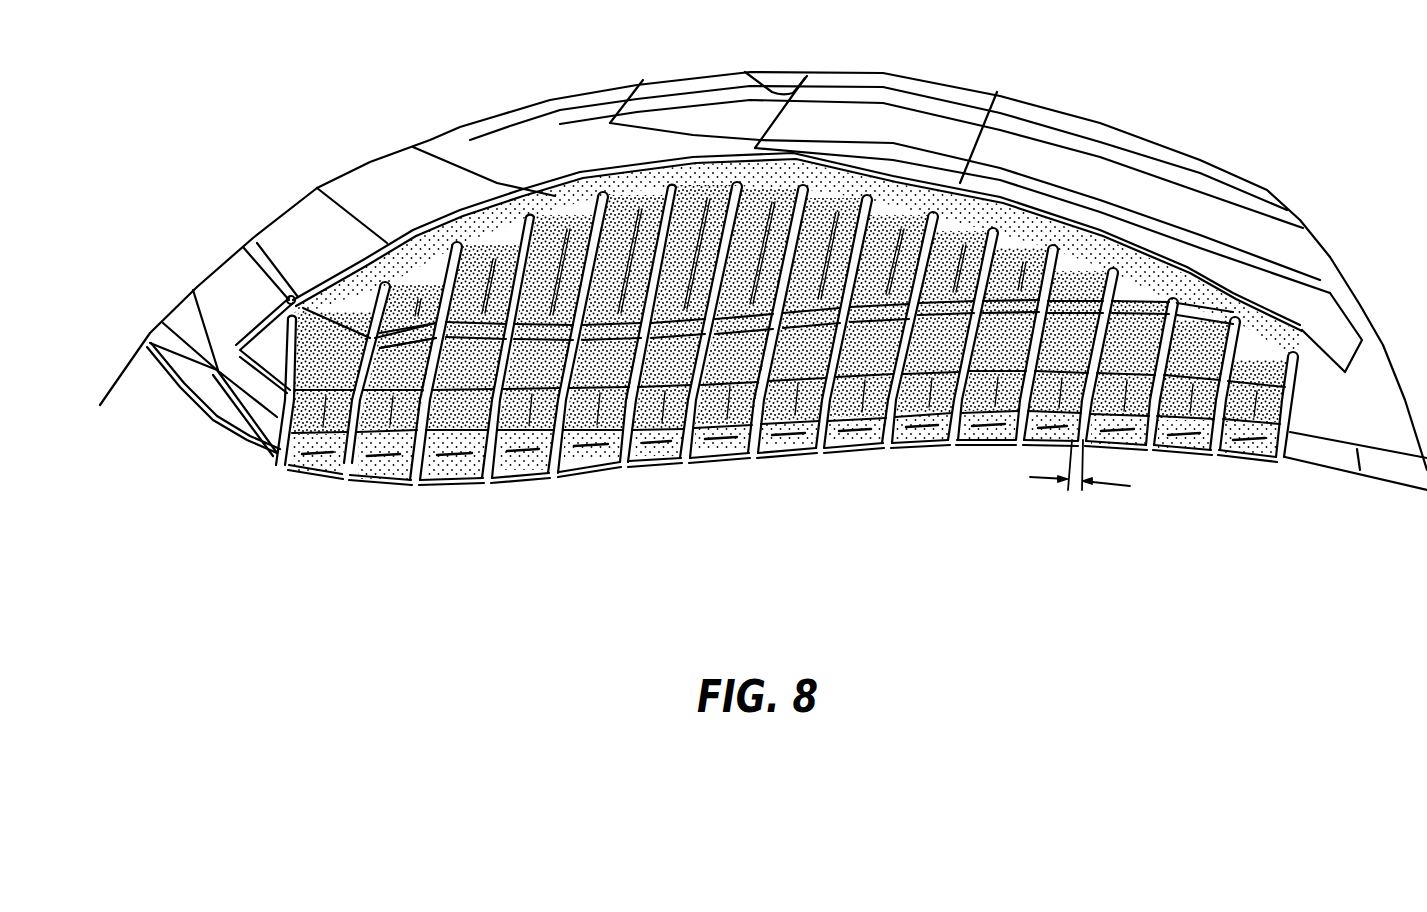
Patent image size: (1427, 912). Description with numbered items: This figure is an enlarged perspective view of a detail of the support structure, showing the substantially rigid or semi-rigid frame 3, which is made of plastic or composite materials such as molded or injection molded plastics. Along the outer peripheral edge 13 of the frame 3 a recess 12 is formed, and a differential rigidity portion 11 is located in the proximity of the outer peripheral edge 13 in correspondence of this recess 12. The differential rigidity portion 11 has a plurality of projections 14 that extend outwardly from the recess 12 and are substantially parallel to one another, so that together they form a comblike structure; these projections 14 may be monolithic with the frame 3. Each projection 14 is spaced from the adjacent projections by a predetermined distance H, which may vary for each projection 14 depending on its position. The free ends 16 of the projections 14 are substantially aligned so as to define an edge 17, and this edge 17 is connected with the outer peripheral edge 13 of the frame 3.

The frame 3 is at (380, 205).
The differential rigidity portion 11 is at (665, 468).
The recess 12 is at (690, 177).
The outer peripheral edge 13 is at (1330, 447).
The projections 14 is at (858, 450).
The free ends 16 is at (463, 467).
The edge 17 is at (383, 481).
The predetermined distance H is at (1030, 477).